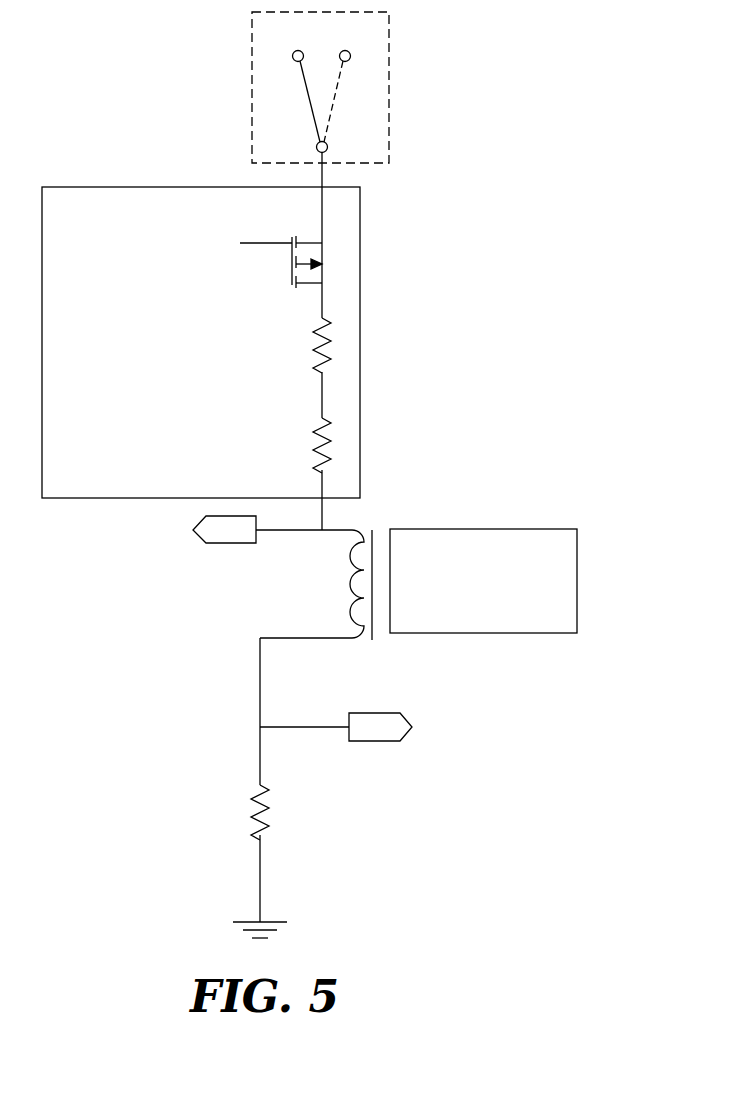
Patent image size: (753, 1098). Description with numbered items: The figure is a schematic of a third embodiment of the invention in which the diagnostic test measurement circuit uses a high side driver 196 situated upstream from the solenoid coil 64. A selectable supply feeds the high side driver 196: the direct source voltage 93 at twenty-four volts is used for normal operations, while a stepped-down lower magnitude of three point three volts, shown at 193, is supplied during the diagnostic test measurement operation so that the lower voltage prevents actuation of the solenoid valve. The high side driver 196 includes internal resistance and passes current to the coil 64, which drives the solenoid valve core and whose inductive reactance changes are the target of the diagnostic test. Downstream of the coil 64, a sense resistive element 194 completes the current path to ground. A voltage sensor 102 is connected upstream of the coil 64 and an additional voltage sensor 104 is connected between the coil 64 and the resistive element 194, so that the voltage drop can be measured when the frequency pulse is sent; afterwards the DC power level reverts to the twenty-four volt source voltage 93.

The 3.3V power supply selection 193 is at (292, 58).
The direct source voltage 93 is at (351, 57).
The high side driver 196 is at (95, 220).
The voltage sensor 102 is at (193, 531).
The coil 64 is at (372, 623).
The additional voltage sensor 104 is at (411, 728).
The resistive element 194 is at (262, 826).